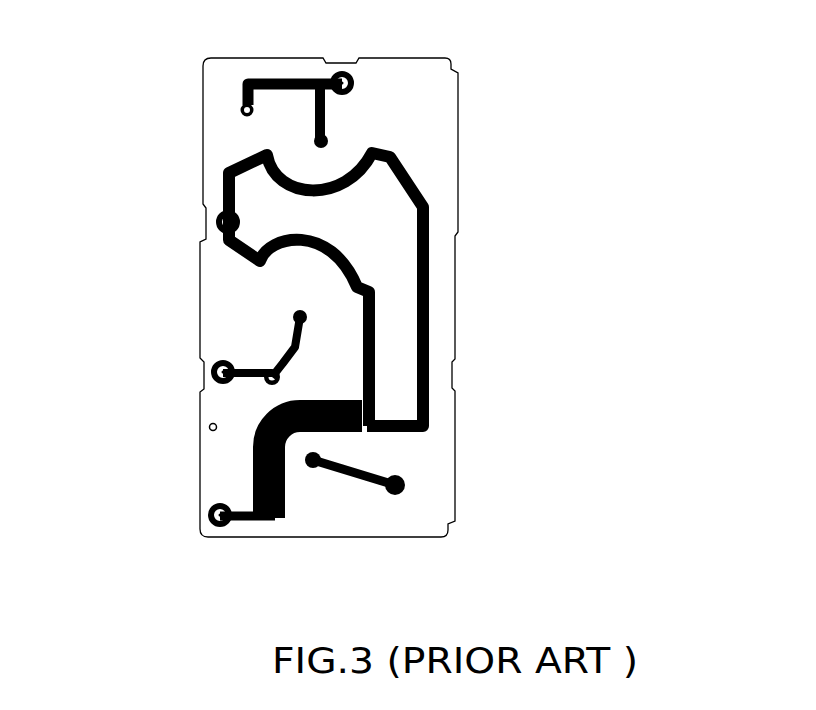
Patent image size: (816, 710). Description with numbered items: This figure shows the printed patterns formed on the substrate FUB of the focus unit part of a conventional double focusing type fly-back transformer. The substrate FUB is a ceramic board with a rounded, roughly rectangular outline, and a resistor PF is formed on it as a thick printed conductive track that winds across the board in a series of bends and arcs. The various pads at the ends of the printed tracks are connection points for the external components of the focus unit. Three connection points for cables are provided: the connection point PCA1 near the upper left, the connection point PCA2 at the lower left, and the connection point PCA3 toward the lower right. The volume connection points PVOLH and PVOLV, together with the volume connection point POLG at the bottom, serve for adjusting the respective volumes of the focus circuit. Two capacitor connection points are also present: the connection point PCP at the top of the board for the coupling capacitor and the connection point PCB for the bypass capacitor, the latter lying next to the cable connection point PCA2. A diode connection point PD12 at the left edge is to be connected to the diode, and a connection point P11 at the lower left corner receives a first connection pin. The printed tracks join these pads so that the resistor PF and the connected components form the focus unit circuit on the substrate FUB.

The substrate FUB is at (463, 188).
The resistor PF is at (444, 299).
The capacitor connection point PCP is at (350, 78).
The volume connection point PVOLH is at (327, 140).
The connection point for cable PCA1 is at (242, 111).
The diode connection point PD12 is at (216, 222).
The volume connection point PVOLV is at (294, 317).
The connection point for cable PCA2 is at (211, 372).
The capacitor connection point PCB is at (264, 383).
The connection point for first connection pin P11 is at (208, 515).
The connection point for cable PCA3 is at (405, 482).
The volume connection point POLG is at (313, 465).